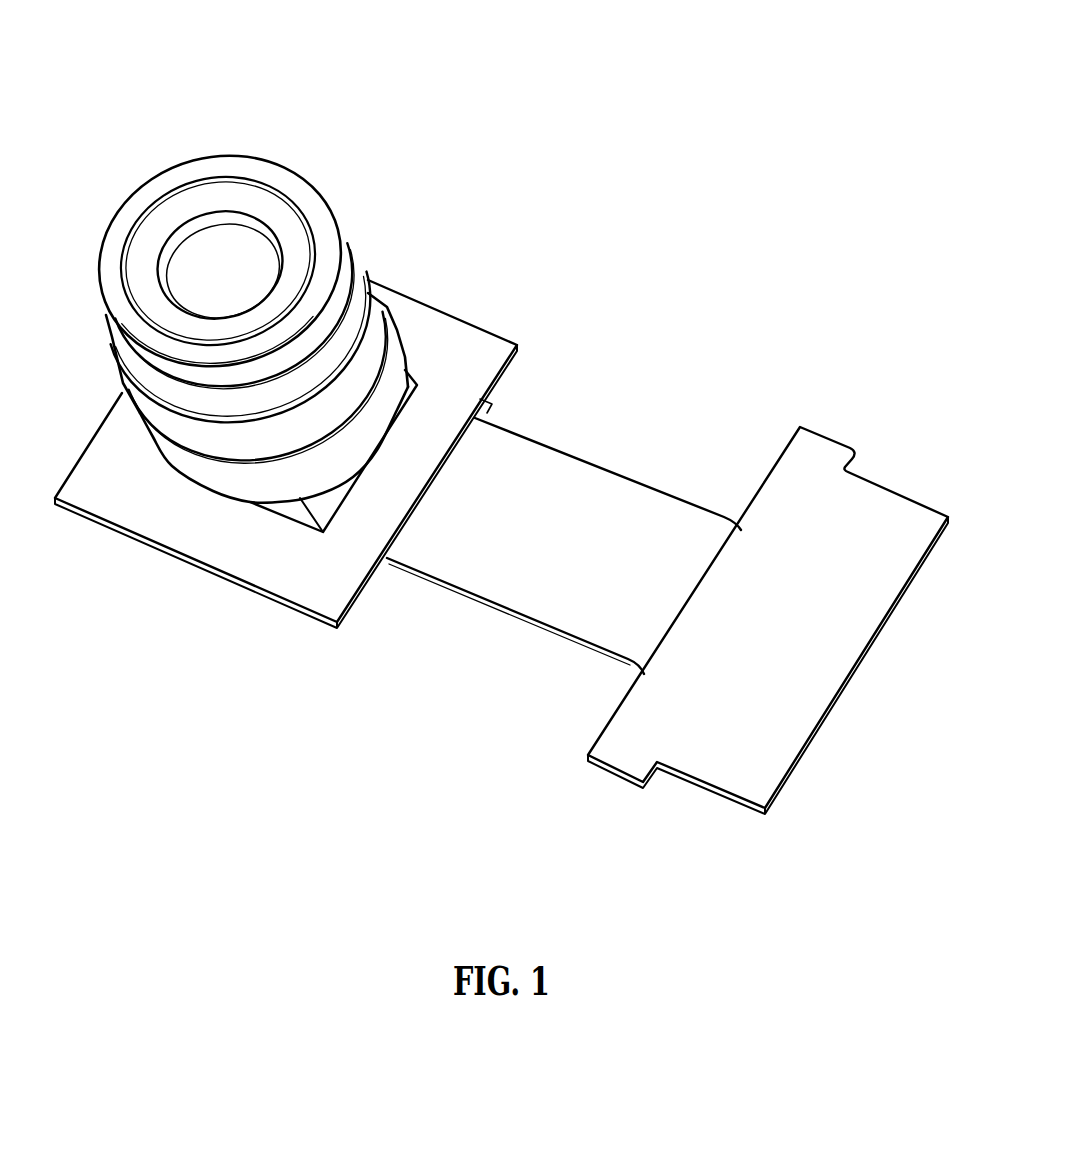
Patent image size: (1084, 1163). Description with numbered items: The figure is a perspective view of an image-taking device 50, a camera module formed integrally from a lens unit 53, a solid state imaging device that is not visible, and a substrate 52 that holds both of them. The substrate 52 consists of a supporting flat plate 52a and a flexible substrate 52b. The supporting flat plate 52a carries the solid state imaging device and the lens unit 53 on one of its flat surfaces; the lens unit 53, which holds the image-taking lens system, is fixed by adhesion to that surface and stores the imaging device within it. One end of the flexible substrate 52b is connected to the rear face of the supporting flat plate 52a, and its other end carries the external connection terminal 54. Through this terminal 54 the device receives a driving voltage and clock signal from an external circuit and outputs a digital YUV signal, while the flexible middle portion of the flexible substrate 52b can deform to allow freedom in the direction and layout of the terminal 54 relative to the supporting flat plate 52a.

The image-taking device 50 is at (653, 89).
The substrate 52 is at (492, 703).
The supporting flat plate 52a is at (357, 596).
The flexible substrate 52b is at (467, 592).
The lens unit 53 is at (393, 285).
The external connection terminal 54 is at (720, 765).